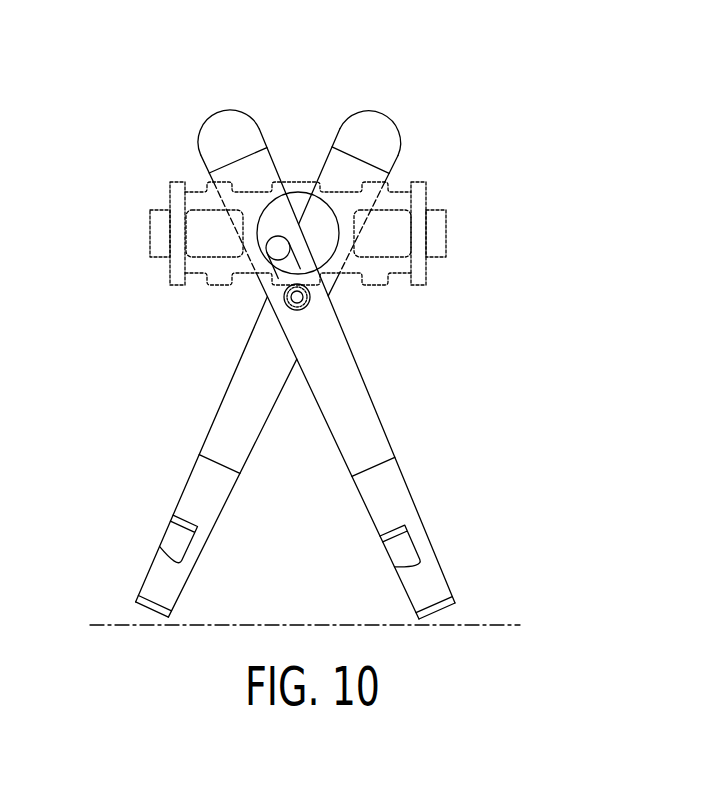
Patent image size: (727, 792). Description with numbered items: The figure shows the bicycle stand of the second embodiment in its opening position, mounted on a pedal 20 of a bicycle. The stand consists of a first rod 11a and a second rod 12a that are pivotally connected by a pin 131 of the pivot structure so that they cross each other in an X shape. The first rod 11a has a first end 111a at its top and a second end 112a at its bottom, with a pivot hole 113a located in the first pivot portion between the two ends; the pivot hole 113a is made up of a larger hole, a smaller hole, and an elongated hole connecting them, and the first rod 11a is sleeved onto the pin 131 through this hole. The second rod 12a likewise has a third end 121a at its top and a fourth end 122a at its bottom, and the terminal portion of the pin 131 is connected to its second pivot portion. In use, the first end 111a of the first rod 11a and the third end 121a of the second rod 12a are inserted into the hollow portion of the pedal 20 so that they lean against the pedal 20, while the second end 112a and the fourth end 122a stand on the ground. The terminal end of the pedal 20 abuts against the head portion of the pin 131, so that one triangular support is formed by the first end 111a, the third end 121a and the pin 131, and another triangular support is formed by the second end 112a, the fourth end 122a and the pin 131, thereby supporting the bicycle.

The pedal 20 is at (428, 192).
The first rod 11a is at (255, 336).
The second rod 12a is at (345, 322).
The first end 111a is at (207, 117).
The second end 112a is at (127, 608).
The third end 121a is at (402, 116).
The fourth end 122a is at (465, 602).
The pivot hole 113a is at (276, 254).
The pin 131 is at (292, 303).